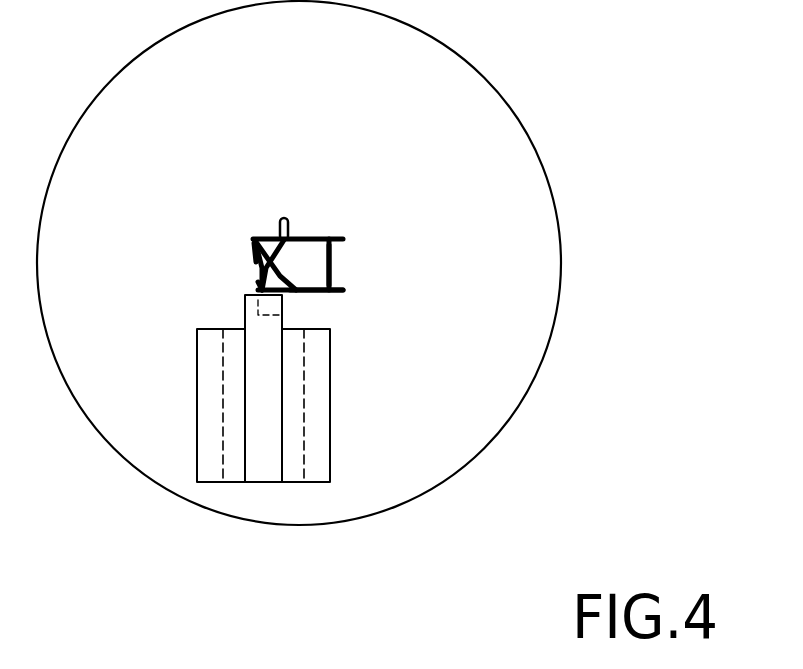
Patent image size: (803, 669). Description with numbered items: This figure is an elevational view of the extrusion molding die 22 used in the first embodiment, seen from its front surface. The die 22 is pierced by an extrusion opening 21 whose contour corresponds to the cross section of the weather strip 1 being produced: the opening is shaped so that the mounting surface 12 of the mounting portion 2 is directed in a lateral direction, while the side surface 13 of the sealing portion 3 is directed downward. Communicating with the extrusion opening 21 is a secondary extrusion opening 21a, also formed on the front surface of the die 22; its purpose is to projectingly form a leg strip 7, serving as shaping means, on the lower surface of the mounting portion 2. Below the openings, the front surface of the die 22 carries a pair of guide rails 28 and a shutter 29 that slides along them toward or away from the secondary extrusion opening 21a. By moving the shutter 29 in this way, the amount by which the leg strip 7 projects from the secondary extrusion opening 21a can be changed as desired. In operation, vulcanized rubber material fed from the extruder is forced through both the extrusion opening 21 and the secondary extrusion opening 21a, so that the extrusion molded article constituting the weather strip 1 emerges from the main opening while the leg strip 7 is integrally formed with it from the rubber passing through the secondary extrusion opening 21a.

The die 22 is at (498, 115).
The weather strip 1 is at (320, 237).
The mounting portion 2 is at (265, 237).
The sealing portion 3 is at (302, 236).
The mounting surface 12 is at (255, 265).
The leg strip 7 is at (256, 286).
The extrusion opening 21 is at (313, 284).
The side surface 13 is at (297, 295).
The secondary extrusion opening 21a is at (287, 316).
The guide rails 28 is at (208, 458).
The shutter 29 is at (260, 470).